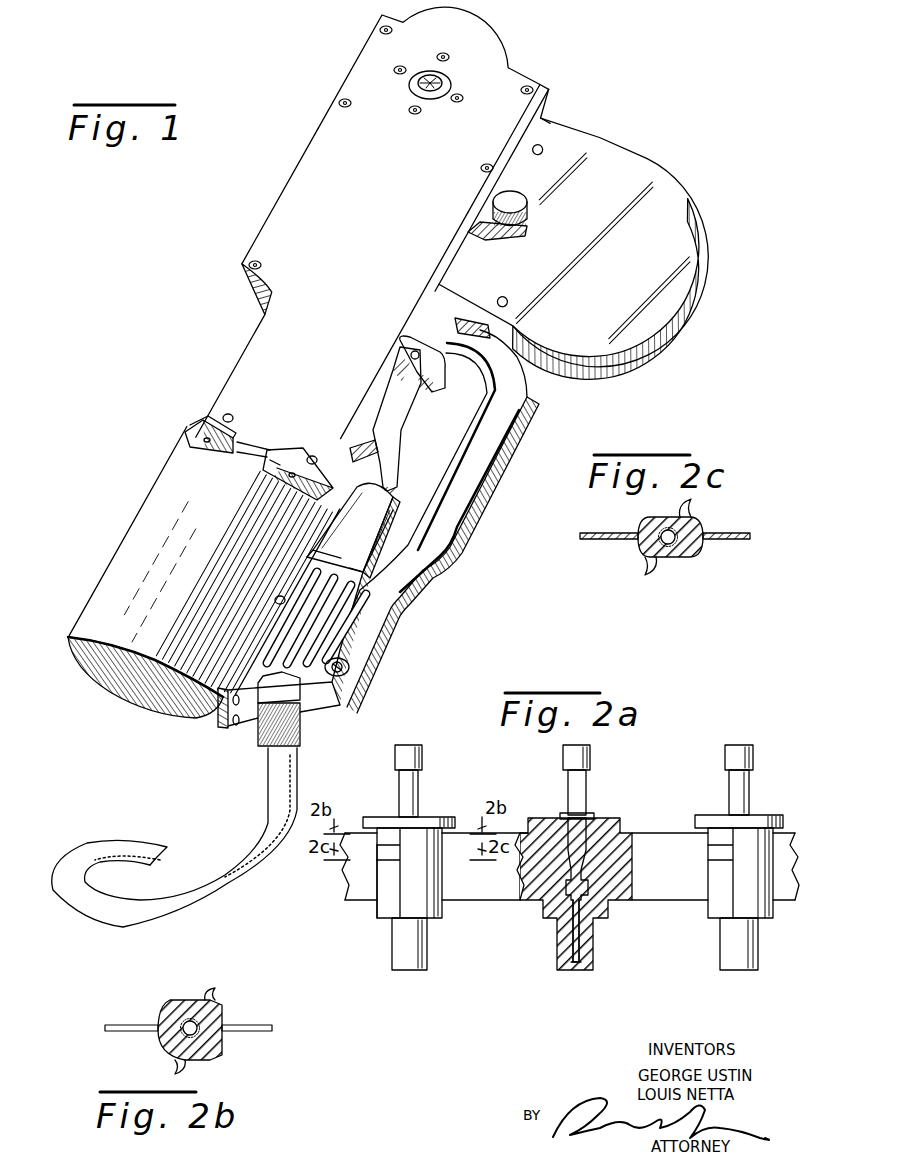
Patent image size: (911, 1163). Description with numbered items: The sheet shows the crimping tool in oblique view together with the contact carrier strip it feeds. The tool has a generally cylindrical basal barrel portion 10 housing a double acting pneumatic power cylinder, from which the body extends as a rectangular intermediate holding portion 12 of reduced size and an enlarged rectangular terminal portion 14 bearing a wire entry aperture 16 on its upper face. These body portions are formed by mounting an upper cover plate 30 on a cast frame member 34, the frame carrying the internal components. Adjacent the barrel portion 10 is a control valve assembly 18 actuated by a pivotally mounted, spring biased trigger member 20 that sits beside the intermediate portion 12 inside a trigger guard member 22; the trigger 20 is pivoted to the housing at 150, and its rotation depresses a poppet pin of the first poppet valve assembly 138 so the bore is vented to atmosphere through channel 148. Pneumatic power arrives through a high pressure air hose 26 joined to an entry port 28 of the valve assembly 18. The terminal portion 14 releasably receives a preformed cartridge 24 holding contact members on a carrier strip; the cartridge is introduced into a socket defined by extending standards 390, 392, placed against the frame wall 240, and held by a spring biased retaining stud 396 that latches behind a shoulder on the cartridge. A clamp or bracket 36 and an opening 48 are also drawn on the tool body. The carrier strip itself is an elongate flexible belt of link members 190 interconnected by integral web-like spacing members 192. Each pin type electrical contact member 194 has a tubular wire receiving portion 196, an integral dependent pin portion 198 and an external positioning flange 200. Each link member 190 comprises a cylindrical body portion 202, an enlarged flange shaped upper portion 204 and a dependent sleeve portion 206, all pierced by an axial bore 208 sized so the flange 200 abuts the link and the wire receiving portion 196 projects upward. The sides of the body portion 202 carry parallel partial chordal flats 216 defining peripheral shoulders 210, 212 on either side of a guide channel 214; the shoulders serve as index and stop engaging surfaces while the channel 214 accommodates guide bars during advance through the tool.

In FIG. 1, the basal barrel portion 10 is at (127, 534).
In FIG. 1, the intermediate holding portion 12 is at (238, 368).
In FIG. 1, the terminal portion 14 is at (332, 103).
In FIG. 1, the wire entry aperture 16 is at (438, 82).
In FIG. 1, the control valve assembly 18 is at (300, 612).
In FIG. 1, the trigger member 20 is at (406, 452).
In FIG. 1, the trigger guard member 22 is at (490, 486).
In FIG. 1, the preformed cartridge 24 is at (650, 168).
In FIG. 1, the high pressure air hose 26 is at (125, 845).
In FIG. 1, the entry port 28 is at (258, 722).
In FIG. 1, the upper cover plate 30 is at (297, 241).
In FIG. 1, the cast frame member 34 is at (243, 292).
In FIG. 1, the clamp bracket 36 is at (288, 455).
In FIG. 1, the shaft opening 48 is at (428, 97).
In FIG. 1, the first poppet valve assembly 138 is at (398, 514).
In FIG. 1, the channel 148 is at (370, 553).
In FIG. 1, the trigger pivot 150 is at (402, 343).
In FIG. 2A, the link member 190 is at (444, 809).
In FIG. 2C, the web-like spacing member 192 is at (735, 533).
In FIG. 2B, the web-like spacing member 192 is at (248, 1026).
In FIG. 2A, the web-like spacing member 192 is at (345, 898).
In FIG. 2A, the pin type electrical contact member 194 is at (382, 752).
In FIG. 2A, the wire receiving portion 196 is at (566, 793).
In FIG. 2A, the pin portion 198 is at (592, 962).
In FIG. 2A, the positioning flange 200 is at (566, 816).
In FIG. 2B, the body portion 202 is at (158, 1015).
In FIG. 2A, the flange shaped upper portion 204 is at (376, 818).
In FIG. 2A, the sleeve portion 206 is at (395, 955).
In FIG. 2A, the axial bore 208 is at (590, 940).
In FIG. 2B, the peripheral shoulder 210 is at (205, 995).
In FIG. 2A, the peripheral shoulder 210 is at (400, 838).
In FIG. 2C, the peripheral shoulder 212 is at (688, 503).
In FIG. 2A, the peripheral shoulder 212 is at (392, 888).
In FIG. 2C, the guide channel 214 is at (693, 514).
In FIG. 2A, the guide channel 214 is at (385, 858).
In FIG. 2C, the partial chordal flats 216 is at (652, 518).
In FIG. 2B, the partial chordal flats 216 is at (175, 1005).
In FIG. 2A, the partial chordal flats 216 is at (430, 905).
In FIG. 1, the frame wall 240 is at (455, 249).
In FIG. 1, the extending standard 390 is at (567, 126).
In FIG. 1, the extending standard 392 is at (480, 340).
In FIG. 1, the spring biased retaining stud 396 is at (527, 206).